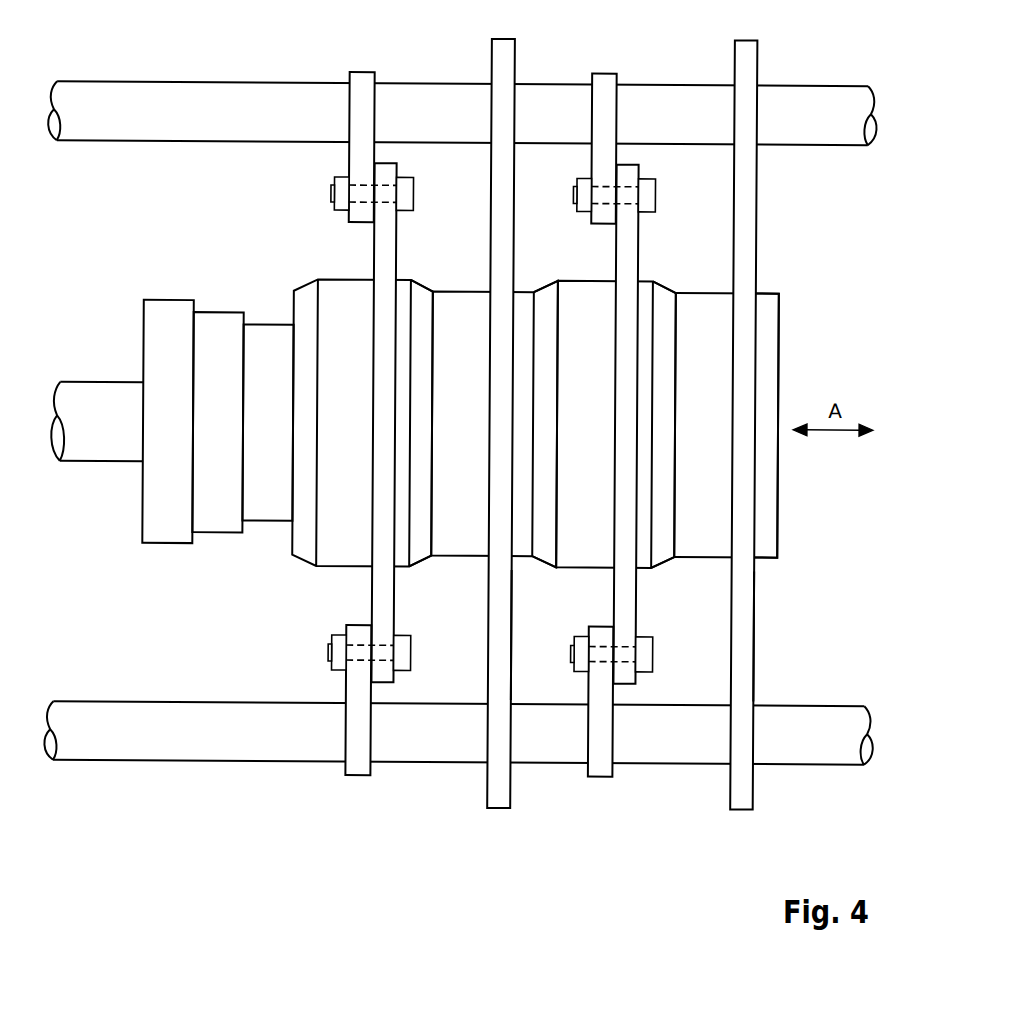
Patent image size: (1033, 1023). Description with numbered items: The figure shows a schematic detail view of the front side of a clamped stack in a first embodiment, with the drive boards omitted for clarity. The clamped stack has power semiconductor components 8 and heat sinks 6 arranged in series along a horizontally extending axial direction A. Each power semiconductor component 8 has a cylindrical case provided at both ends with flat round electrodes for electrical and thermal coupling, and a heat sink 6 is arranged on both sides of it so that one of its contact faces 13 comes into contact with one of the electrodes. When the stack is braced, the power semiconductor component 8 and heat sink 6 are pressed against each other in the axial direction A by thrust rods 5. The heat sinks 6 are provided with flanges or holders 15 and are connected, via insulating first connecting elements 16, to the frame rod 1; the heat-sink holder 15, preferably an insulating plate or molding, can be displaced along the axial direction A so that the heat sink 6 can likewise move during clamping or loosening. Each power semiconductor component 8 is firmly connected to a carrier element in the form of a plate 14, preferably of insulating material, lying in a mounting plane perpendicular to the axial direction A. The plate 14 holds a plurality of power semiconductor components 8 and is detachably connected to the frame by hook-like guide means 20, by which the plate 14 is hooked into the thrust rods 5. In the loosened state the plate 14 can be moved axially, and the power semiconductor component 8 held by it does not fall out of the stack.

The frame rod 1 is at (233, 128).
The thrust rod 5 is at (102, 448).
The heat sink 6 is at (341, 553).
The power semiconductor component 8 is at (469, 545).
The contact face 13 is at (435, 292).
The plate 14 is at (504, 582).
The heat-sink holder 15 is at (394, 572).
The first connecting element 16 is at (364, 762).
The guide means 20 is at (513, 54).